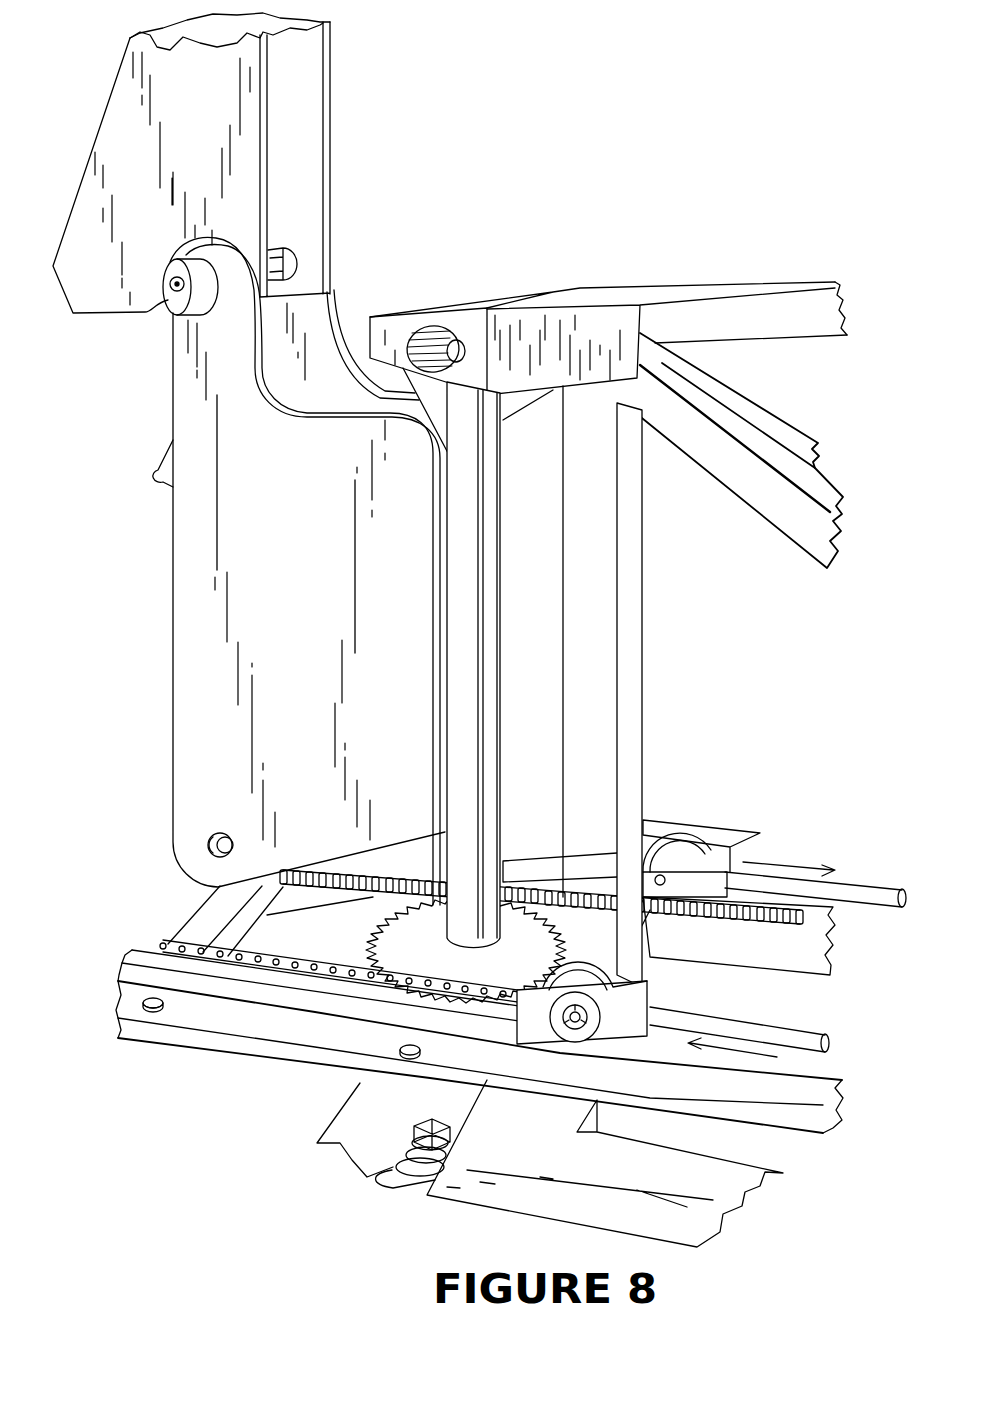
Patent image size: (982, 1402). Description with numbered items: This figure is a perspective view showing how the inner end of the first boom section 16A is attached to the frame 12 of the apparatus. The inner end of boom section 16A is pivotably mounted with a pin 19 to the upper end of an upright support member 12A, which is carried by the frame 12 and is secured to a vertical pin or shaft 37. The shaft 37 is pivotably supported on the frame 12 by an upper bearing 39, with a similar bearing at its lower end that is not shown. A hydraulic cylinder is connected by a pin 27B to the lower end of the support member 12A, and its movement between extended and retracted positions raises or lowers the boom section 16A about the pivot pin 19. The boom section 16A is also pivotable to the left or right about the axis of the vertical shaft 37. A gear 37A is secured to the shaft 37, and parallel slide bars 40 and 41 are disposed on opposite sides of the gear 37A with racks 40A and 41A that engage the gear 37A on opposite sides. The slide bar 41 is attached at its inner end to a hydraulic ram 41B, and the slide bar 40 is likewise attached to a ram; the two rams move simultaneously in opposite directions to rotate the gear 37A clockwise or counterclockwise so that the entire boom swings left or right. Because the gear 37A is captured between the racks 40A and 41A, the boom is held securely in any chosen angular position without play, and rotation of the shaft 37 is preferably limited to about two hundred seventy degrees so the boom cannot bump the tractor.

The boom section 16A is at (212, 174).
The pin 19 is at (157, 300).
The upright support member 12A is at (318, 769).
The pin 27B is at (207, 848).
The upper bearing 39 is at (480, 308).
The rack 40A is at (276, 955).
The gear 37A is at (493, 972).
The slide bar 41 is at (525, 867).
The rack 41A is at (728, 920).
The vertical pin or shaft 37 is at (493, 713).
The hydraulic ram 41B is at (847, 887).
The slide bar 40 is at (248, 993).
The frame 12 is at (510, 1202).